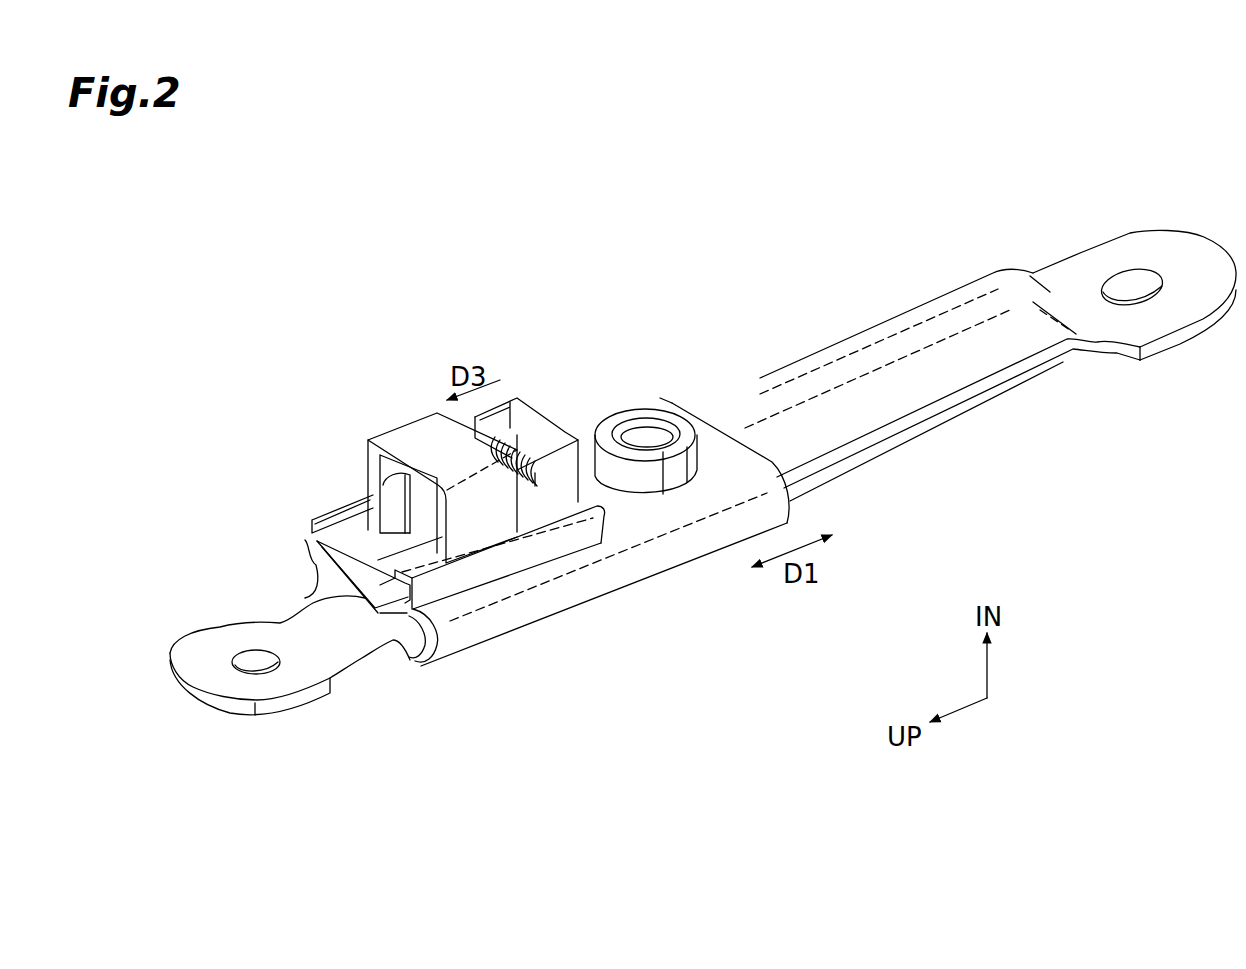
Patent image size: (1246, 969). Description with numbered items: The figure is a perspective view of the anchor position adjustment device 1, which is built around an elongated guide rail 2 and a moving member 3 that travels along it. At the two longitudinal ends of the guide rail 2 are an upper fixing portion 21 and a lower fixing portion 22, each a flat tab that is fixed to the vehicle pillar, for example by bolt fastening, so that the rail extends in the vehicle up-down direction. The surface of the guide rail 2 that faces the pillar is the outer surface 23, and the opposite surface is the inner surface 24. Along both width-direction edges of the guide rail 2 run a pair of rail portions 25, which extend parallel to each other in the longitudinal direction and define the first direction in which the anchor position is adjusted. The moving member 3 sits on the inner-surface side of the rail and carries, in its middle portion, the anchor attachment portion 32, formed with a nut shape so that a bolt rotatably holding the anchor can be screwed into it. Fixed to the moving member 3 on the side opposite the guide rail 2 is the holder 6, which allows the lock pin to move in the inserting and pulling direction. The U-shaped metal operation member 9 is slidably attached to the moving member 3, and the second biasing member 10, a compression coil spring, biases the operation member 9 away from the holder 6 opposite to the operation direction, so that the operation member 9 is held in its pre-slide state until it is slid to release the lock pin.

The anchor position adjustment device 1 is at (437, 247).
The guide rail 2 is at (1010, 405).
The moving member 3 is at (610, 600).
The holder 6 is at (343, 473).
The operation member 9 is at (530, 395).
The second biasing member 10 is at (537, 410).
The upper fixing portion 21 is at (245, 650).
The lower fixing portion 22 is at (1118, 282).
The outer surface 23 is at (907, 398).
The inner surface 24 is at (910, 378).
The rail portions 25 is at (828, 345).
The anchor attachment portion 32 is at (622, 410).